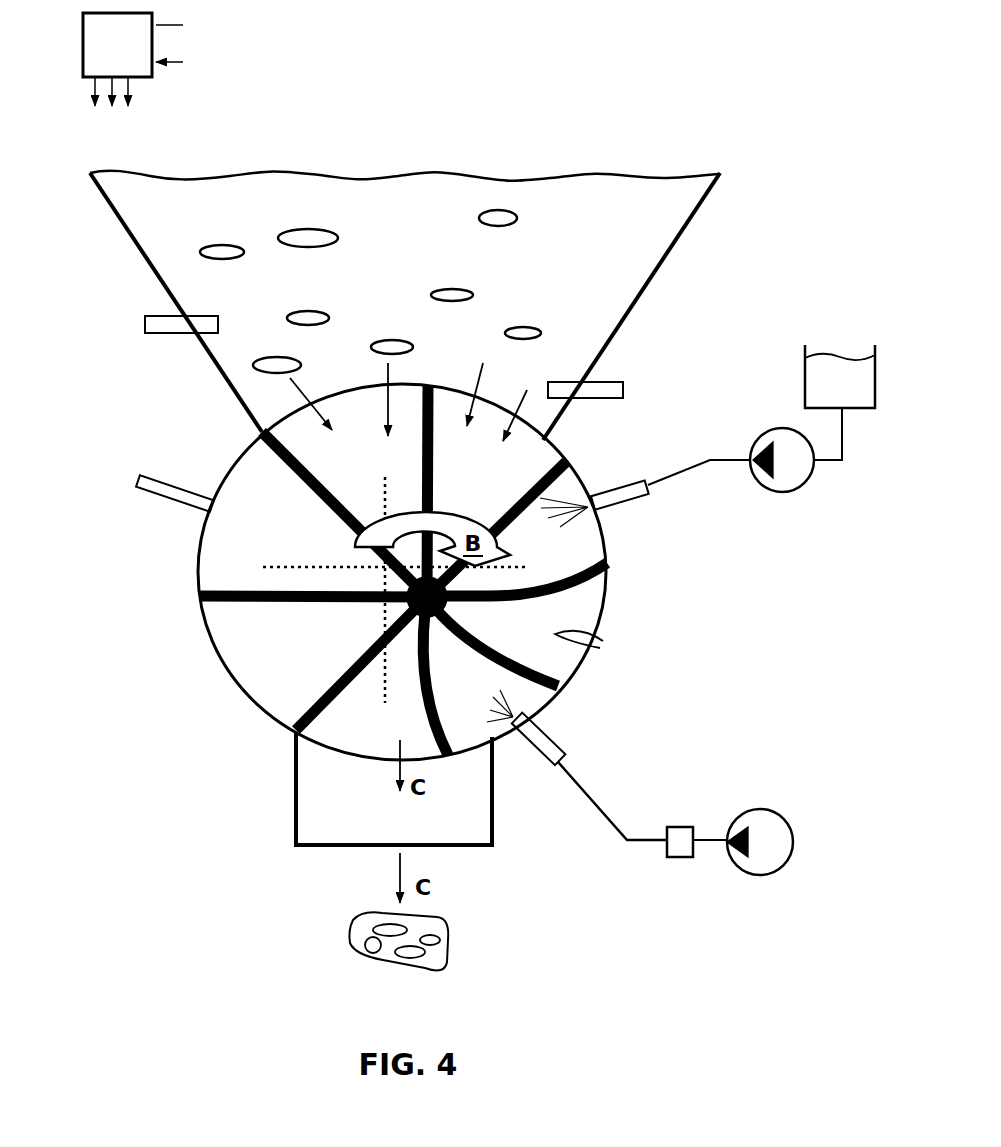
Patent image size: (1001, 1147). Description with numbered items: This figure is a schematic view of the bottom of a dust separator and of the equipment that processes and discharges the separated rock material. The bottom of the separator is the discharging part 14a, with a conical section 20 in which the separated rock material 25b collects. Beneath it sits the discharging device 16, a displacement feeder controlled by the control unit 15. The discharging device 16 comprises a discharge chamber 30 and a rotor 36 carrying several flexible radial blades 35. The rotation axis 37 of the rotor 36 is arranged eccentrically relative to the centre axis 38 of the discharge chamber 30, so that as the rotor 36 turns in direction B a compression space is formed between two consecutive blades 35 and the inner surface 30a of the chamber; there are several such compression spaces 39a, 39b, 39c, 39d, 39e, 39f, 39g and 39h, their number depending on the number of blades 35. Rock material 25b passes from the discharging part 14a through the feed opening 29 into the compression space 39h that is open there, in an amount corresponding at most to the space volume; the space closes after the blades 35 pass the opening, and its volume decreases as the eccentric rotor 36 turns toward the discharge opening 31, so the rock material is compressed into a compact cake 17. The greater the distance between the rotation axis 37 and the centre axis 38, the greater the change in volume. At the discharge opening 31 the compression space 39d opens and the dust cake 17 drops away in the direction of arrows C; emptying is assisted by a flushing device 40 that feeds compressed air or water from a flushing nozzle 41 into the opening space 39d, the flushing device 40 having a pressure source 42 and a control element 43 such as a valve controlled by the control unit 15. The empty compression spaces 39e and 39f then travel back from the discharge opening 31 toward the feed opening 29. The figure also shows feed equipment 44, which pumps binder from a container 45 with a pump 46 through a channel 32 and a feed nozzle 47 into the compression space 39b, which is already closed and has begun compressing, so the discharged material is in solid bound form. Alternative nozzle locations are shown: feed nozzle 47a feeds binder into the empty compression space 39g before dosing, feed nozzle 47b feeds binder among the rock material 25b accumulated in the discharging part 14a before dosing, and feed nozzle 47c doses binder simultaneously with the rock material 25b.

The discharging part 14a is at (710, 220).
The control unit 15 is at (105, 58).
The discharging device 16 is at (208, 437).
The cake 17 is at (367, 933).
The conical section 20 is at (152, 275).
The rock material 25b is at (395, 222).
The feed opening 29 is at (455, 378).
The discharge chamber 30 is at (200, 630).
The inner surface of the discharge chamber 30a is at (600, 648).
The discharge opening 31 is at (377, 758).
The channel 32 is at (672, 478).
The flexible radial blades 35 is at (603, 577).
The rotor 36 is at (573, 603).
The rotation axis 37 is at (403, 612).
The centre axis 38 is at (405, 605).
The compression space 39a is at (450, 507).
The compression space 39b is at (540, 563).
The compression space 39c is at (490, 637).
The compression space 39d is at (440, 683).
The compression space 39e is at (337, 733).
The compression space 39f is at (274, 701).
The compression space 39g is at (290, 544).
The compression space 39h is at (326, 475).
The flushing device 40 is at (733, 895).
The flushing nozzle 41 is at (528, 753).
The pressure source 42 is at (767, 847).
The control element 43 is at (682, 857).
The feed equipment 44 is at (765, 358).
The container 45 is at (837, 378).
The pump 46 is at (780, 445).
The feed nozzle 47 is at (613, 493).
The feed nozzle 47a is at (138, 482).
The feed nozzle 47b is at (150, 322).
The feed nozzle 47c is at (605, 388).